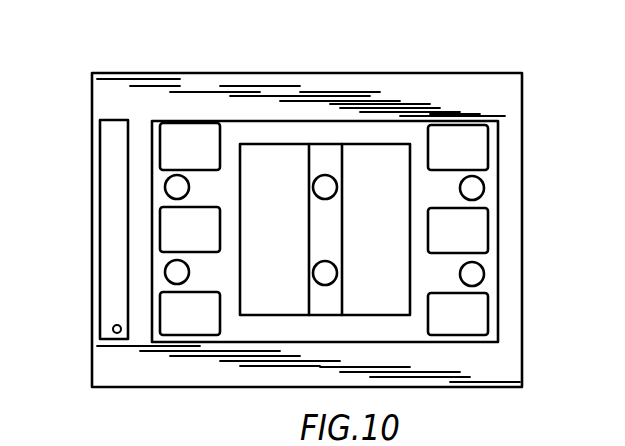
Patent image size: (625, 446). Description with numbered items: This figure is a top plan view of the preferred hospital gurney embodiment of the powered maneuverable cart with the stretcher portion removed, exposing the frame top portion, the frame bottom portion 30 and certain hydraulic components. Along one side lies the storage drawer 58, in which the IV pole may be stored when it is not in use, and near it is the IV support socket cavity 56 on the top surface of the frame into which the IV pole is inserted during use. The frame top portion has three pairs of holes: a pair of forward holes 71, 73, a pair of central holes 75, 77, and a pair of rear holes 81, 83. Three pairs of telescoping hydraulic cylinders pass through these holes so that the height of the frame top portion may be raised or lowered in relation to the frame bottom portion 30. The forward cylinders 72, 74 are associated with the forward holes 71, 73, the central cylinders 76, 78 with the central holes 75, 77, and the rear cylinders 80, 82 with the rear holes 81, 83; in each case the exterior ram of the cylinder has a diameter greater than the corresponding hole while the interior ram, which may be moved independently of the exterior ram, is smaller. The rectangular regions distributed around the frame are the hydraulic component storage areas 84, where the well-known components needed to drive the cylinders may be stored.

The frame bottom portion 30 is at (503, 98).
The IV support socket cavity 56 is at (69, 300).
The storage drawer 58 is at (107, 140).
The top portion forward hole 71 is at (190, 186).
The forward cylinder 72 is at (175, 176).
The top portion forward hole 73 is at (190, 271).
The forward cylinder 74 is at (168, 260).
The top portion central hole 75 is at (338, 188).
The central cylinder 76 is at (324, 175).
The top portion central hole 77 is at (338, 273).
The central cylinder 78 is at (312, 276).
The rear cylinder 80 is at (474, 188).
The top portion rear hole 81 is at (460, 188).
The rear cylinder 82 is at (478, 278).
The top portion rear hole 83 is at (461, 274).
The hydraulic component storage area 84 is at (202, 142).